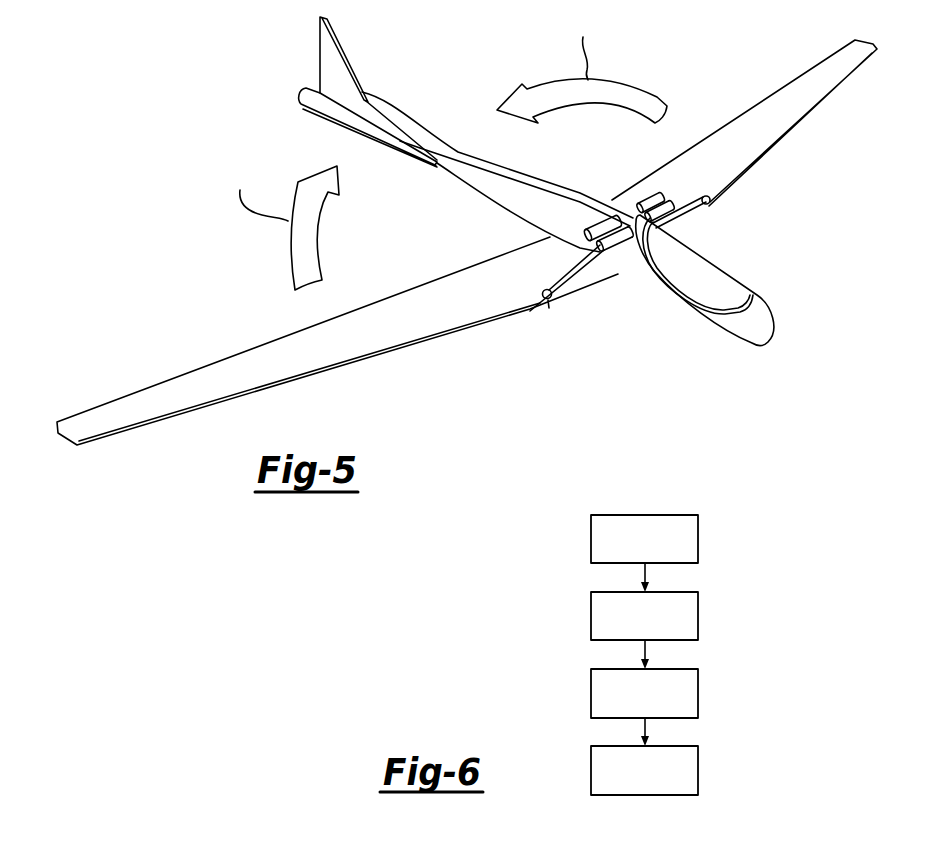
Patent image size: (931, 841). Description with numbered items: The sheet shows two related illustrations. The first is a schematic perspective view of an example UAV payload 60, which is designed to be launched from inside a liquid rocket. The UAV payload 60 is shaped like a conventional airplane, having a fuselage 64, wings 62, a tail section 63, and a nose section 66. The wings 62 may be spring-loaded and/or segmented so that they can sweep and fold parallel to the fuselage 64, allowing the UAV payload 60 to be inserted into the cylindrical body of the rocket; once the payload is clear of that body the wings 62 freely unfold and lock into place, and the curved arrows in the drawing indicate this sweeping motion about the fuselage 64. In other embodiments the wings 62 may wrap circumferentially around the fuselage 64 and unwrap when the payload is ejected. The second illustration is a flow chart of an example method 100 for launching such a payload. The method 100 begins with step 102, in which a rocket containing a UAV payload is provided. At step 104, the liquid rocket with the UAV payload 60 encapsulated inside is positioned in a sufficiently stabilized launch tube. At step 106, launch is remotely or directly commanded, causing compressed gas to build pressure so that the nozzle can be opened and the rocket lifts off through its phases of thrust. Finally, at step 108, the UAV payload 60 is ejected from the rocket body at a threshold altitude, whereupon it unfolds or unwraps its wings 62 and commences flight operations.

In FIG. 5, the UAV payload 60 is at (222, 42).
In FIG. 5, the wings 62 is at (229, 382).
In FIG. 5, the tail section 63 is at (331, 63).
In FIG. 5, the fuselage 64 is at (460, 152).
In FIG. 5, the nose section 66 is at (707, 274).
In FIG. 6, the method 100 is at (744, 504).
In FIG. 6, the step 102 is at (633, 553).
In FIG. 6, the step 104 is at (633, 630).
In FIG. 6, the step 106 is at (633, 707).
In FIG. 6, the step 108 is at (633, 784).